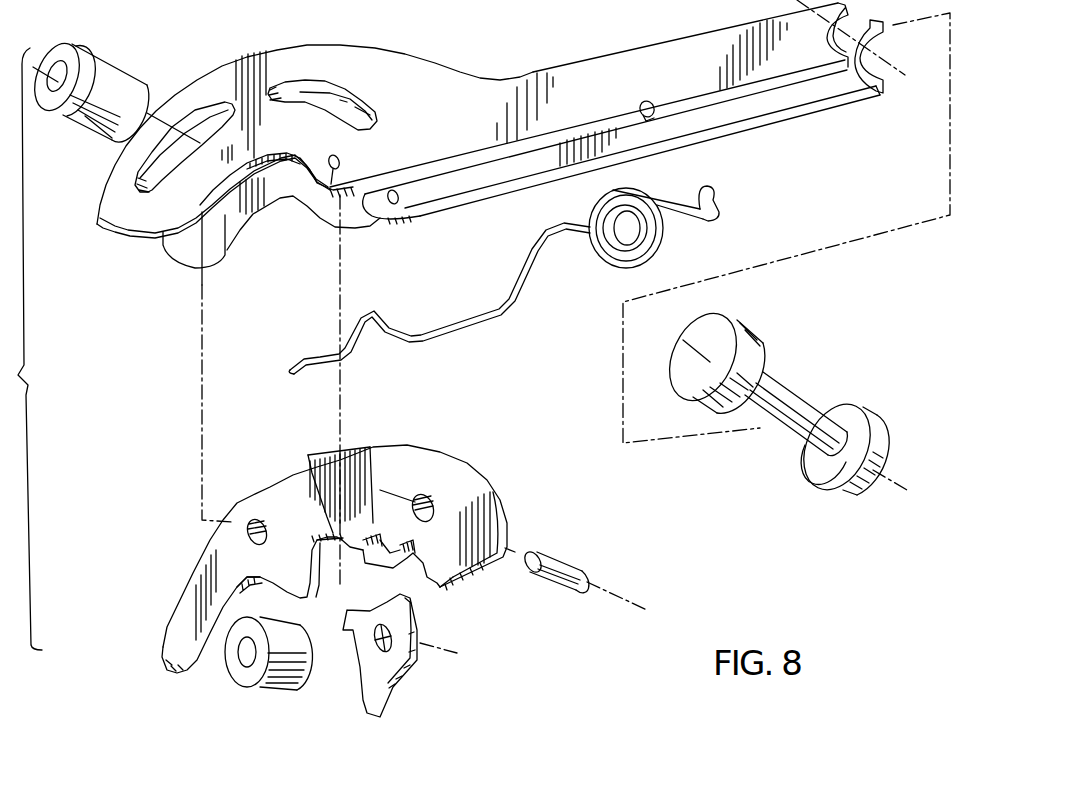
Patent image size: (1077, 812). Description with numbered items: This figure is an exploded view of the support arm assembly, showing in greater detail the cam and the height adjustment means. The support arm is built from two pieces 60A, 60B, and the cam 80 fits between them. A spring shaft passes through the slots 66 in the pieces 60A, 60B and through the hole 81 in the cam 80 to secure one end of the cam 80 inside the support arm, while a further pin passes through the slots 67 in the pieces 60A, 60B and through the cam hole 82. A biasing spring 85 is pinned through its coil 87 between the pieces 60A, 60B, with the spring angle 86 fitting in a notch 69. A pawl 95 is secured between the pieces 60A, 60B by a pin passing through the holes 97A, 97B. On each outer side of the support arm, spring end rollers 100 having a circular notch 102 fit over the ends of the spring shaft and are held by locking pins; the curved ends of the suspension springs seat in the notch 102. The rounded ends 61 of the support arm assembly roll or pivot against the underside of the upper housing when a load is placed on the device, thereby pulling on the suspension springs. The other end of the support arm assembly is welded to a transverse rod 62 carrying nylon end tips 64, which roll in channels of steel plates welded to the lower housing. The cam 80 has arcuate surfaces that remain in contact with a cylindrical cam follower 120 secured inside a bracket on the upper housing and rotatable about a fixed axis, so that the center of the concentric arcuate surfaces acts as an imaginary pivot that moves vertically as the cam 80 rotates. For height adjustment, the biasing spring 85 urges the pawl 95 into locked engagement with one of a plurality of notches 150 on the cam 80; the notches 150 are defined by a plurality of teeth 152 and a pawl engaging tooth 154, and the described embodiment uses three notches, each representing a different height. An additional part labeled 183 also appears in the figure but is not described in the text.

The rounded ends 61 is at (315, 45).
The slots 66 is at (161, 192).
The slots 67 is at (347, 90).
The spring end rollers 100 is at (130, 72).
The circular notch 102 is at (112, 62).
The piece 60A is at (612, 52).
The piece 60B is at (852, 106).
The notch 69 is at (650, 100).
The hole 97A is at (330, 193).
The hole 97B is at (400, 197).
The biasing spring 85 is at (490, 323).
The spring angle 86 is at (713, 197).
The coil 87 is at (640, 270).
The cam 80 is at (182, 612).
The hole 81 is at (267, 520).
The cam hole 82 is at (437, 493).
The notches 150 is at (330, 480).
The teeth 152 is at (407, 580).
The pawl engaging tooth 154 is at (237, 590).
The pawl 95 is at (358, 700).
The cylindrical cam follower 120 is at (226, 676).
The pin 183 is at (540, 585).
The transverse rod 62 is at (793, 437).
The nylon end tips 64 is at (755, 333).